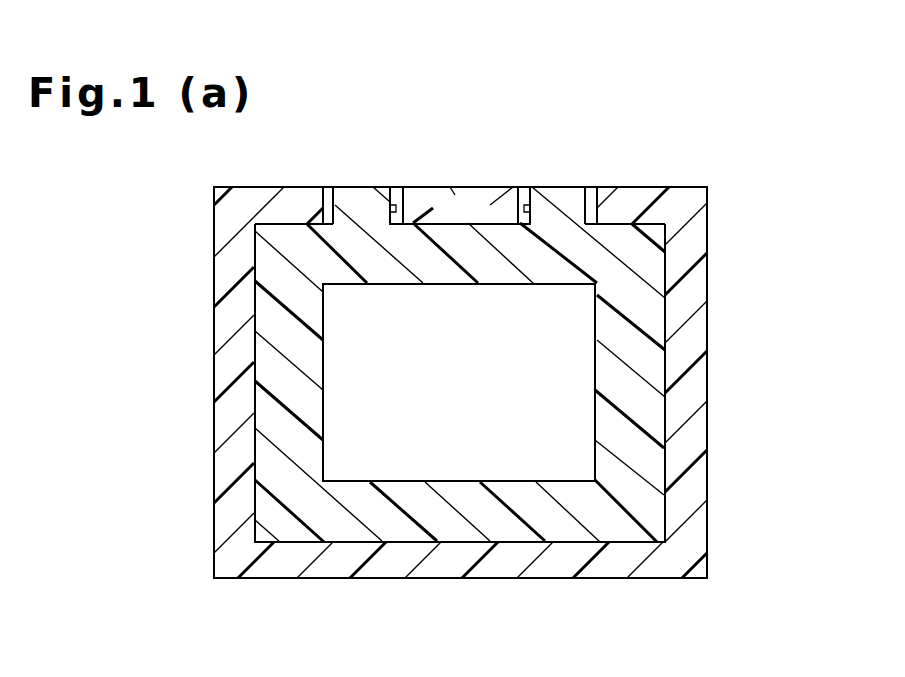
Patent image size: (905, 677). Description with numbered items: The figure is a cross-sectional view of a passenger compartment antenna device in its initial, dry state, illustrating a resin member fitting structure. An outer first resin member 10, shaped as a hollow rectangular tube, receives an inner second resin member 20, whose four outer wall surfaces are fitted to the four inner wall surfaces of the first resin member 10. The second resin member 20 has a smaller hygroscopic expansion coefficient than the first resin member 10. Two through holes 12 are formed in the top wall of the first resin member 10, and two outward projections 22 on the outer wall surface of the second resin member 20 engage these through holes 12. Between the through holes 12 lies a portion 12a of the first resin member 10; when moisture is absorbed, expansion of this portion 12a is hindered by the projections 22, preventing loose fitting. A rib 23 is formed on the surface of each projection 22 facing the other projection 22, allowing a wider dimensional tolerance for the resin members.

The first resin member 10 is at (690, 295).
The second resin member 20 is at (647, 457).
The projections 22 is at (353, 186).
The through holes 12 is at (523, 187).
The portion between the through holes 12a is at (460, 205).
The rib 23 is at (519, 225).